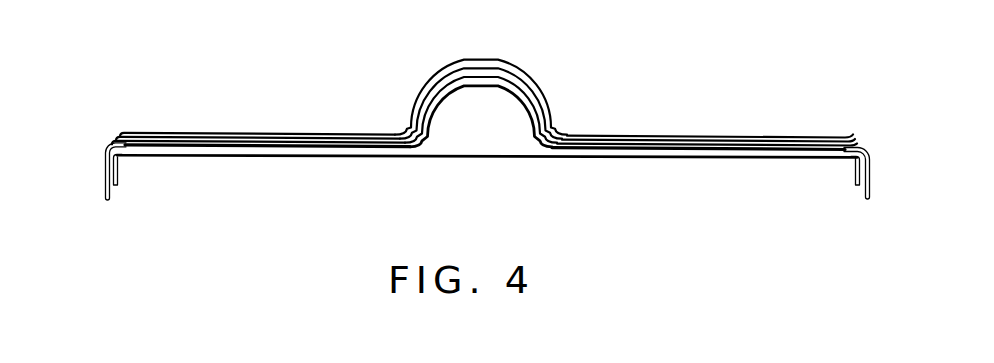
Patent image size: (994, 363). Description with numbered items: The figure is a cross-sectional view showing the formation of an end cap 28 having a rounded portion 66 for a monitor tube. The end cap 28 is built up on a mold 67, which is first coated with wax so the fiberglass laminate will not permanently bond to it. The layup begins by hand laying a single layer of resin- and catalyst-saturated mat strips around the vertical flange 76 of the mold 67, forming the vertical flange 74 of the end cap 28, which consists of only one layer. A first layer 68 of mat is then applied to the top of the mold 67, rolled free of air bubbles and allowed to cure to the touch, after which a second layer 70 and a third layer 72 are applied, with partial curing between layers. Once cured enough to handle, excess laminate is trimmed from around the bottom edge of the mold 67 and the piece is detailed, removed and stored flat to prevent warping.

The end cap 28 is at (685, 135).
The rounded portion 66 is at (523, 85).
The mold 67 is at (170, 158).
The first layer 68 is at (874, 138).
The second layer 70 is at (855, 137).
The third layer 72 is at (838, 131).
The vertical flange 74 is at (105, 168).
The vertical flange of the mold 76 is at (857, 172).